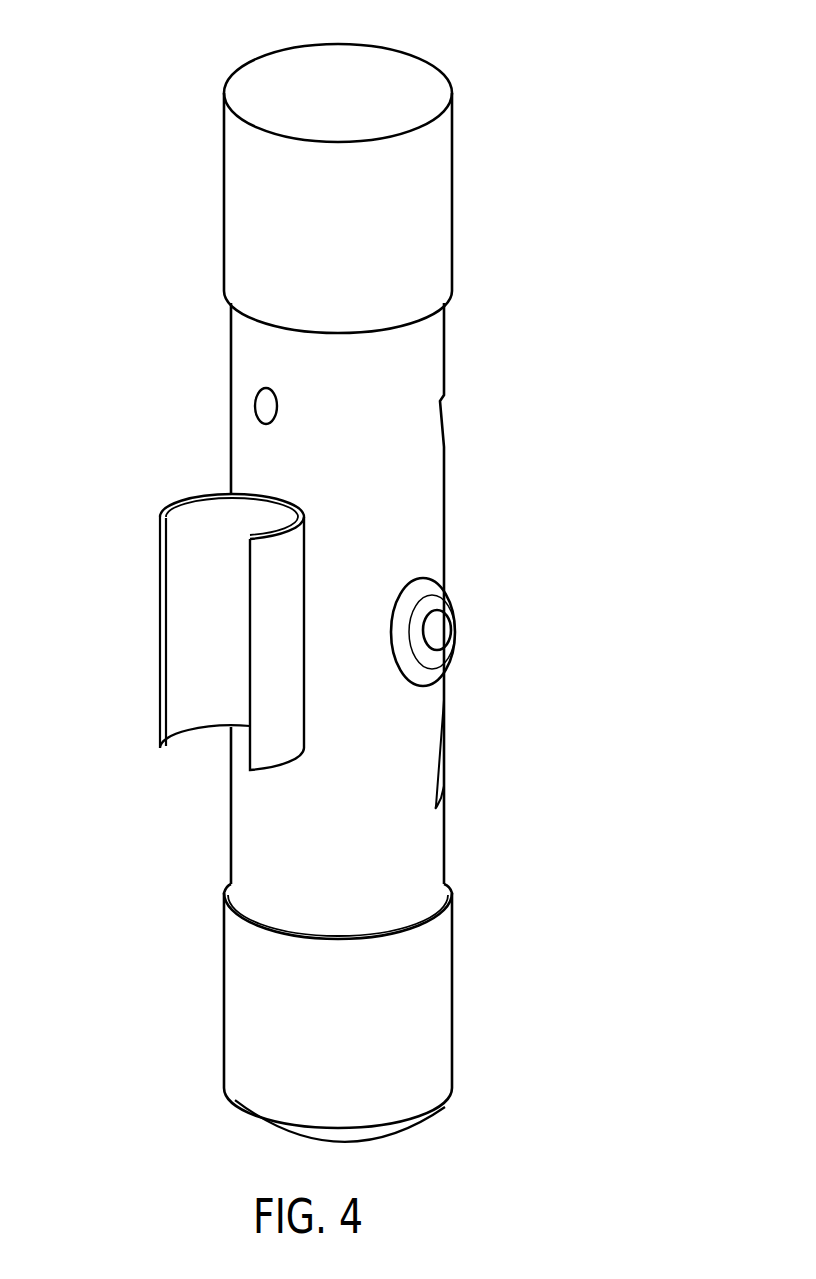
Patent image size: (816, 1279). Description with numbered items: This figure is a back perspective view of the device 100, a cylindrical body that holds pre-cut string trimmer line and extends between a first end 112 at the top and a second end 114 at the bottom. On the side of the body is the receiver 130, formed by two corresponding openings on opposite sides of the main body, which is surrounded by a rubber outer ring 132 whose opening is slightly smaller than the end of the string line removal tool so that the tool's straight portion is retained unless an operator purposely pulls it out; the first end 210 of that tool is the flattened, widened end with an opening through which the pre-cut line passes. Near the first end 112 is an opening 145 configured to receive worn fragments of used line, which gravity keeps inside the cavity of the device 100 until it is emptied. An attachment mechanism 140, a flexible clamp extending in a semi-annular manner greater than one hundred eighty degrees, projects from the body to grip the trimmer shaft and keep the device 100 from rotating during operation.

The device 100 is at (111, 90).
The first end 112 is at (404, 76).
The second end 114 is at (393, 1128).
The receiver 130 is at (436, 632).
The rubber outer ring 132 is at (437, 606).
The attachment mechanism 140 is at (181, 580).
The opening 145 is at (264, 403).
The first end 210 is at (246, 842).